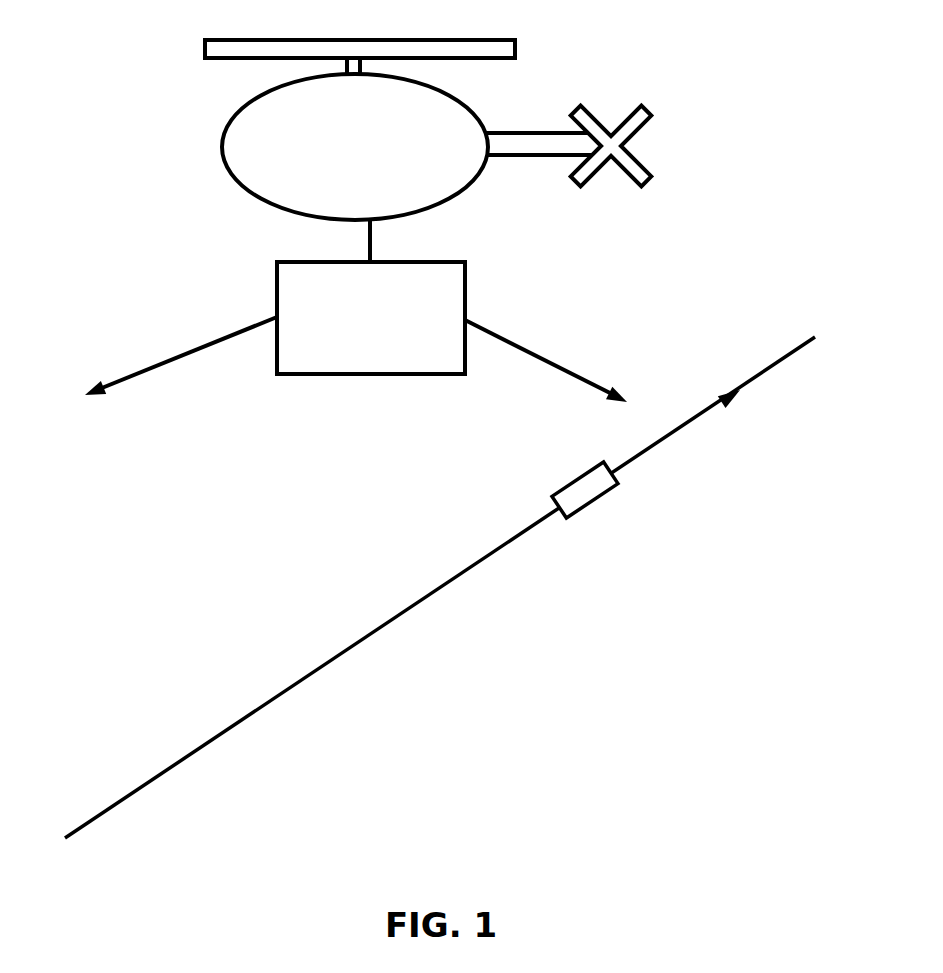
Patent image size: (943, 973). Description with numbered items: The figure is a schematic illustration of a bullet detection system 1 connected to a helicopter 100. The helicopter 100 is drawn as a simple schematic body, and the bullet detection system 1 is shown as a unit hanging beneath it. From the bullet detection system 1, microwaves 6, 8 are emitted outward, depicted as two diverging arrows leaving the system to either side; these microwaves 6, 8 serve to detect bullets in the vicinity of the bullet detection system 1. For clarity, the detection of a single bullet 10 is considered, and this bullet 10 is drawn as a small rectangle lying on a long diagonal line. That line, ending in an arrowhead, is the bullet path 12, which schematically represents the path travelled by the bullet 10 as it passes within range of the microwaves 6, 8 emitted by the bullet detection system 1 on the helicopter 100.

The helicopter 100 is at (428, 130).
The bullet detection system 1 is at (371, 318).
The microwaves 6 is at (223, 340).
The microwaves 8 is at (540, 358).
The bullet 10 is at (588, 512).
The bullet path 12 is at (413, 608).